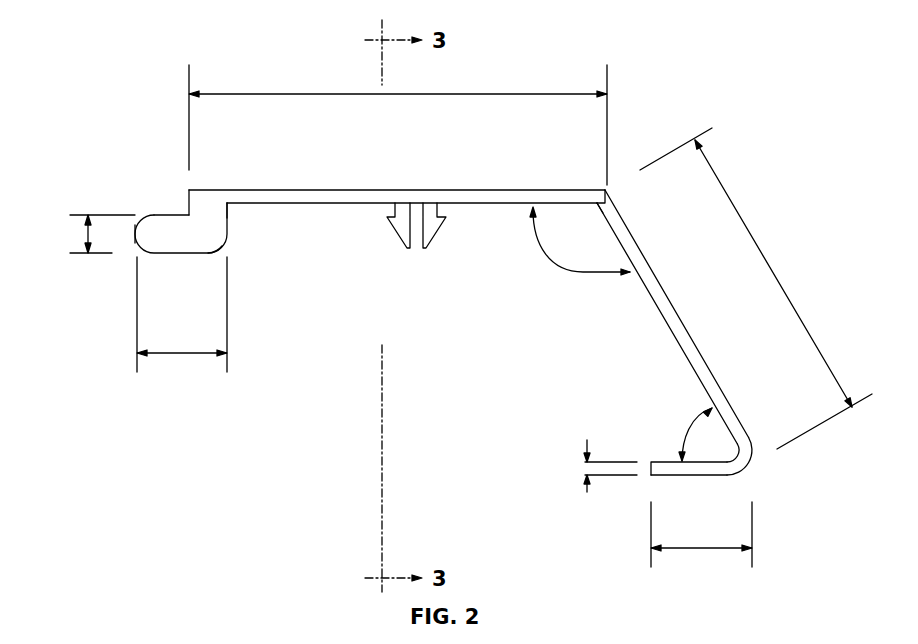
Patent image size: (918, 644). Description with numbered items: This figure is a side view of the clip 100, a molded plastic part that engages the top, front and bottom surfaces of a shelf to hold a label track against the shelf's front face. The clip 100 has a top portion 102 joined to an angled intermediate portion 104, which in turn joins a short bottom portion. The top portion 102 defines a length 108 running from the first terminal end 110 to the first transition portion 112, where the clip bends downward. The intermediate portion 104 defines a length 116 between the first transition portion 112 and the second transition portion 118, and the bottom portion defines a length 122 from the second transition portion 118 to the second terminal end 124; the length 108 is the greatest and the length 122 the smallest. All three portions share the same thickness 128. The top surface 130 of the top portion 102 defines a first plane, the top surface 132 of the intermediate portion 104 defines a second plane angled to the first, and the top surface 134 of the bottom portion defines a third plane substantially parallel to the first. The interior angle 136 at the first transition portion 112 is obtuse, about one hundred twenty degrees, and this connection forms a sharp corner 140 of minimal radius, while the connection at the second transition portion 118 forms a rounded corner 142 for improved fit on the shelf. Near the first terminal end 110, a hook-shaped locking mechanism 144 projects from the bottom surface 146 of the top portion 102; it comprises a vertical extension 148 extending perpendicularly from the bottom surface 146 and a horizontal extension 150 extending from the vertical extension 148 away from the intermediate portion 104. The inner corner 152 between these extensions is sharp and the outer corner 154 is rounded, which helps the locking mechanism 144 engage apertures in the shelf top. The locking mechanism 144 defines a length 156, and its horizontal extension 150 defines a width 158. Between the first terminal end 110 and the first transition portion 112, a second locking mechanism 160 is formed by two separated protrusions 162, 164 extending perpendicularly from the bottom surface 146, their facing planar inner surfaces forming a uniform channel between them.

The clip 100 is at (452, 318).
The top portion 102 is at (397, 190).
The intermediate portion 104 is at (684, 317).
The length 108 is at (253, 94).
The first terminal end 110 is at (189, 191).
The first transition portion 112 is at (607, 188).
The length 116 is at (767, 257).
The second transition portion 118 is at (752, 456).
The length 122 is at (683, 548).
The second terminal end 124 is at (650, 468).
The thickness 128 is at (587, 490).
The top surface 130 is at (312, 190).
The top surface 132 is at (647, 262).
The top surface 134 is at (693, 476).
The angle 136 is at (580, 272).
The sharp corner 140 is at (600, 220).
The rounded corner 142 is at (729, 448).
The locking mechanism 144 is at (135, 243).
The bottom surface 146 is at (347, 204).
The vertical extension 148 is at (226, 218).
The horizontal extension 150 is at (170, 253).
The inner corner 152 is at (189, 214).
The outer corner 154 is at (217, 246).
The length 156 is at (173, 353).
The width 158 is at (88, 232).
The locking mechanism 160 is at (413, 269).
The protrusion 162 is at (443, 230).
The protrusion 164 is at (395, 232).